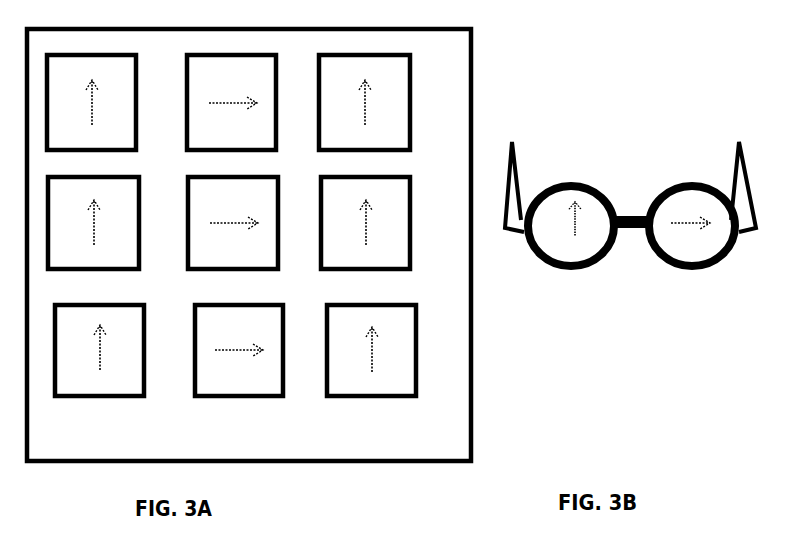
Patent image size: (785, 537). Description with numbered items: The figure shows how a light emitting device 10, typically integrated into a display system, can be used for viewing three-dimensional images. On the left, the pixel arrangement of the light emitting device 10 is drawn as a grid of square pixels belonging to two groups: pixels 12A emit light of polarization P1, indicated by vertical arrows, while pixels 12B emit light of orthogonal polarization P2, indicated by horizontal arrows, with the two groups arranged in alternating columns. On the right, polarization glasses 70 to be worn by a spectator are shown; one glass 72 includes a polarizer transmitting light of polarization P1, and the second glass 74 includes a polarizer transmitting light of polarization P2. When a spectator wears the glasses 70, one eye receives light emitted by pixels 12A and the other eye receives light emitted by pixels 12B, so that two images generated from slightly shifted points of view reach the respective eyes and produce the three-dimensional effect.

In FIG. 3A, the light emitting device 10 is at (465, 70).
In FIG. 3A, the pixels 12A is at (113, 286).
In FIG. 3A, the pixels 12B is at (253, 286).
In FIG. 3A, the polarization P1 is at (101, 365).
In FIG. 3B, the polarization P1 is at (577, 222).
In FIG. 3A, the polarization P2 is at (235, 352).
In FIG. 3B, the polarization P2 is at (694, 232).
In FIG. 3B, the polarization glasses 70 is at (630, 173).
In FIG. 3B, the glass 72 is at (590, 213).
In FIG. 3B, the glass 74 is at (705, 212).